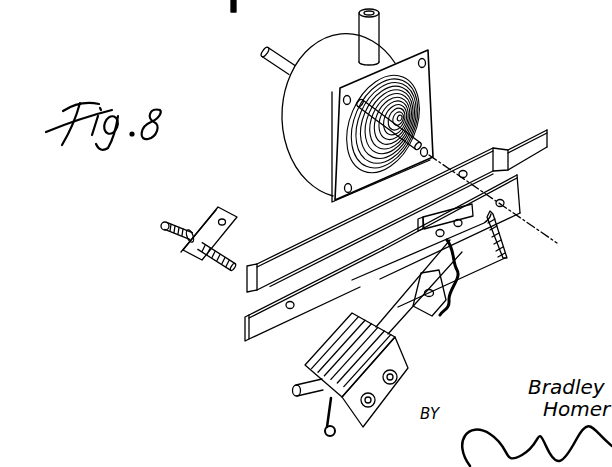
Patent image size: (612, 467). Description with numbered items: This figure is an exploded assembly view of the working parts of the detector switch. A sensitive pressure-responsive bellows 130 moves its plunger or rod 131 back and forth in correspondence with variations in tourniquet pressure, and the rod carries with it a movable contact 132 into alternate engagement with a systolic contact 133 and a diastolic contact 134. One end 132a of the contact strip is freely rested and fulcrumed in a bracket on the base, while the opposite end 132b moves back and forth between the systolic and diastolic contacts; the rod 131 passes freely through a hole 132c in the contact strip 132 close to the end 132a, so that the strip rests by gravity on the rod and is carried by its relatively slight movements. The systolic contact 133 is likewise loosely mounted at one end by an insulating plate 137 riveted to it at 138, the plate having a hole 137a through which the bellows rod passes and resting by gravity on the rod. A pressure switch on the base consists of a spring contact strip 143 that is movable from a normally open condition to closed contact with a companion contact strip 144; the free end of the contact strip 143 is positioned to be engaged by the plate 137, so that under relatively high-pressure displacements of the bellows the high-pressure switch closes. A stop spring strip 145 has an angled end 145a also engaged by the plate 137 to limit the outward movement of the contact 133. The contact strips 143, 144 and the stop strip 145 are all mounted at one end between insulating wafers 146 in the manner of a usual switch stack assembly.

The bellows 130 is at (398, 51).
The rod 131 is at (418, 124).
The movable contact 132 is at (339, 232).
The end of the movable contact 132a is at (527, 143).
The opposite end of the contact 132b is at (253, 263).
The hole 132c is at (467, 171).
The systolic contact 133 is at (290, 310).
The diastolic contact 134 is at (224, 270).
The insulating plate 137 is at (521, 188).
The hole 137a is at (505, 203).
The rivet 138 is at (457, 219).
The spring contact strip 143 is at (458, 269).
The companion contact strip 144 is at (432, 318).
The stop spring strip 145 is at (490, 268).
The angled end 145a is at (507, 252).
The insulating wafers 146 is at (326, 404).